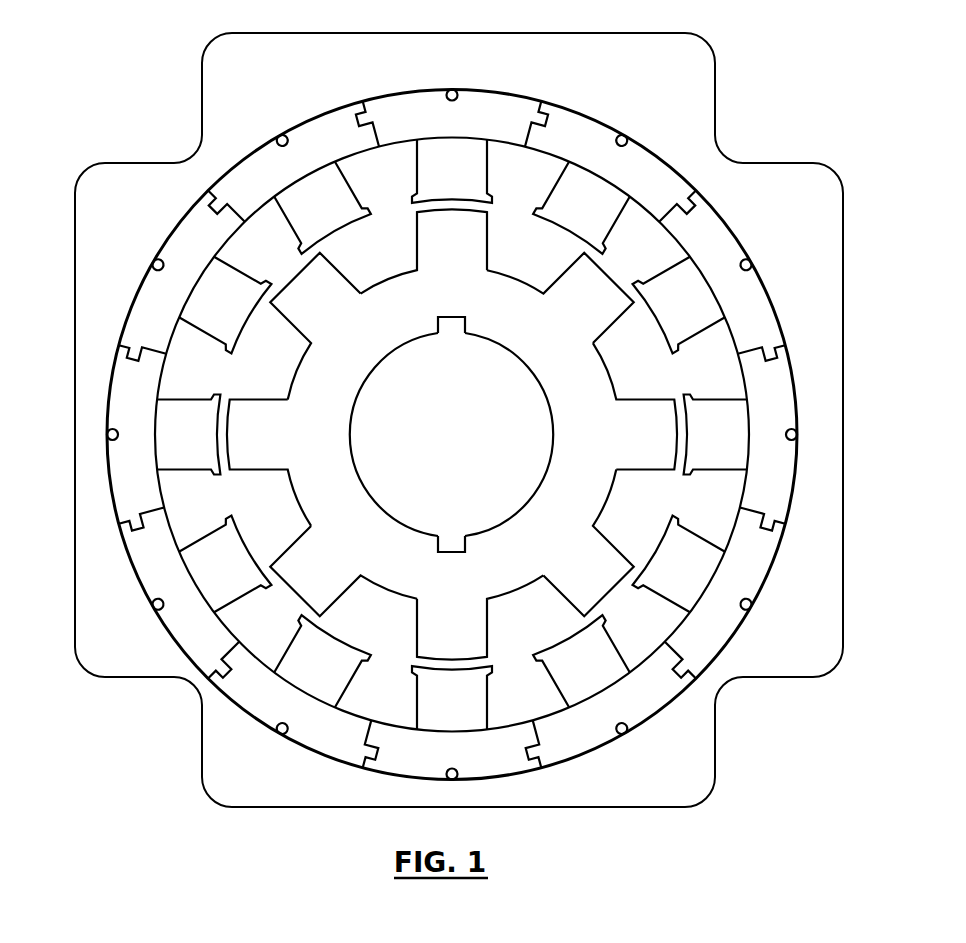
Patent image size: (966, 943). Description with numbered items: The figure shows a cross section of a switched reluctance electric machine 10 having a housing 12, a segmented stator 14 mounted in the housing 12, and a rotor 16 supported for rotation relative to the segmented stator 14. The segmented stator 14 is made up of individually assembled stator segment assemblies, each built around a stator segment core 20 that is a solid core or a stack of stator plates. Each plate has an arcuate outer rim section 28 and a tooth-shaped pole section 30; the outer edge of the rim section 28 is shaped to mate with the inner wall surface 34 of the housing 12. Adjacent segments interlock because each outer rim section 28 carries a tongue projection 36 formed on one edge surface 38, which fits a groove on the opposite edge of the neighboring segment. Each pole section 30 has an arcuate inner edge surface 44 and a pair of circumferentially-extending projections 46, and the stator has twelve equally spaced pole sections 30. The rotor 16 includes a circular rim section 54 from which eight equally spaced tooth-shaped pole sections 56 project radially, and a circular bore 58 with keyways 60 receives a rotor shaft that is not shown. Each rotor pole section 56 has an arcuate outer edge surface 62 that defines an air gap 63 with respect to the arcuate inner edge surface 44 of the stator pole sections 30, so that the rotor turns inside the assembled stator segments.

The switched reluctance electric machine 10 is at (758, 100).
The housing 12 is at (812, 208).
The segmented stator 14 is at (770, 273).
The rotor 16 is at (515, 358).
The stator segment core 20 is at (473, 103).
The arcuate outer rim section 28 is at (384, 131).
The tooth-shaped pole section 30 is at (307, 221).
The inner wall surface 34 is at (758, 263).
The tongue projection 36 is at (369, 103).
The edge surface 38 is at (523, 100).
The arcuate inner edge surface 44 is at (440, 203).
The circumferentially-extending projections 46 is at (417, 198).
The circular rim section 54 is at (558, 458).
The tooth-shaped pole sections 56 is at (297, 311).
The circular bore 58 is at (530, 500).
The keyways 60 is at (462, 320).
The arcuate outer edge surface 62 is at (297, 268).
The air gap 63 is at (492, 216).